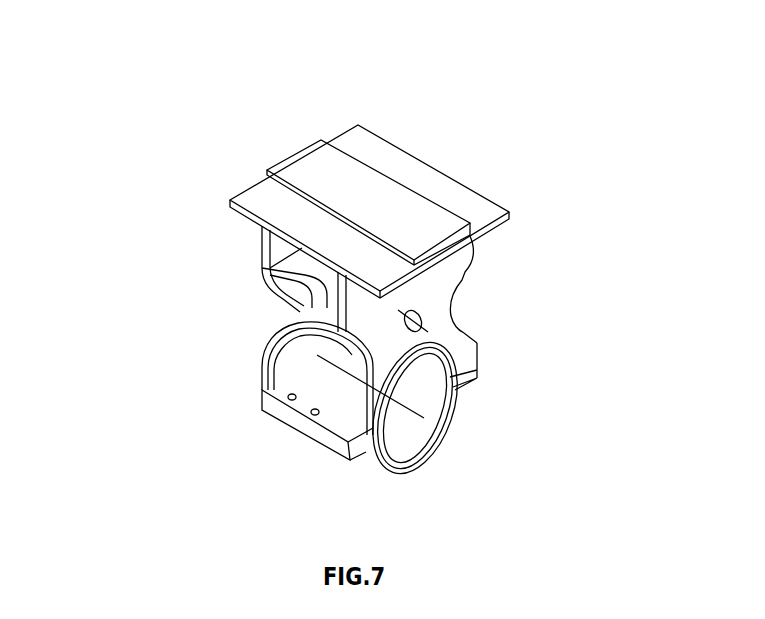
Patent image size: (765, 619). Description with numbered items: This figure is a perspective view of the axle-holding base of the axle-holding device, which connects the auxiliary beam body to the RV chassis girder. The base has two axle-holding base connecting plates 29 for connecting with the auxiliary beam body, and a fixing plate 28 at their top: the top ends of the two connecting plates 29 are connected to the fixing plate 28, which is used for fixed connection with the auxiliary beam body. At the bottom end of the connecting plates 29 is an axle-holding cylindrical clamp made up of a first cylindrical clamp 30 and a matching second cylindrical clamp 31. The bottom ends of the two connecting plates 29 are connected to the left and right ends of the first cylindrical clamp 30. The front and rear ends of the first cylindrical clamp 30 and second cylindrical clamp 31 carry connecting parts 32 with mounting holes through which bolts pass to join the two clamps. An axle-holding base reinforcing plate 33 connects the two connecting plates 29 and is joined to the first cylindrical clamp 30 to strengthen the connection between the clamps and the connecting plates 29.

The fixing plate 28 is at (312, 192).
The axle-holding base connecting plate 29 is at (438, 292).
The first cylindrical clamp 30 is at (436, 360).
The second cylindrical clamp 31 is at (443, 430).
The connecting part 32 is at (308, 423).
The axle-holding base reinforcing plate 33 is at (308, 312).